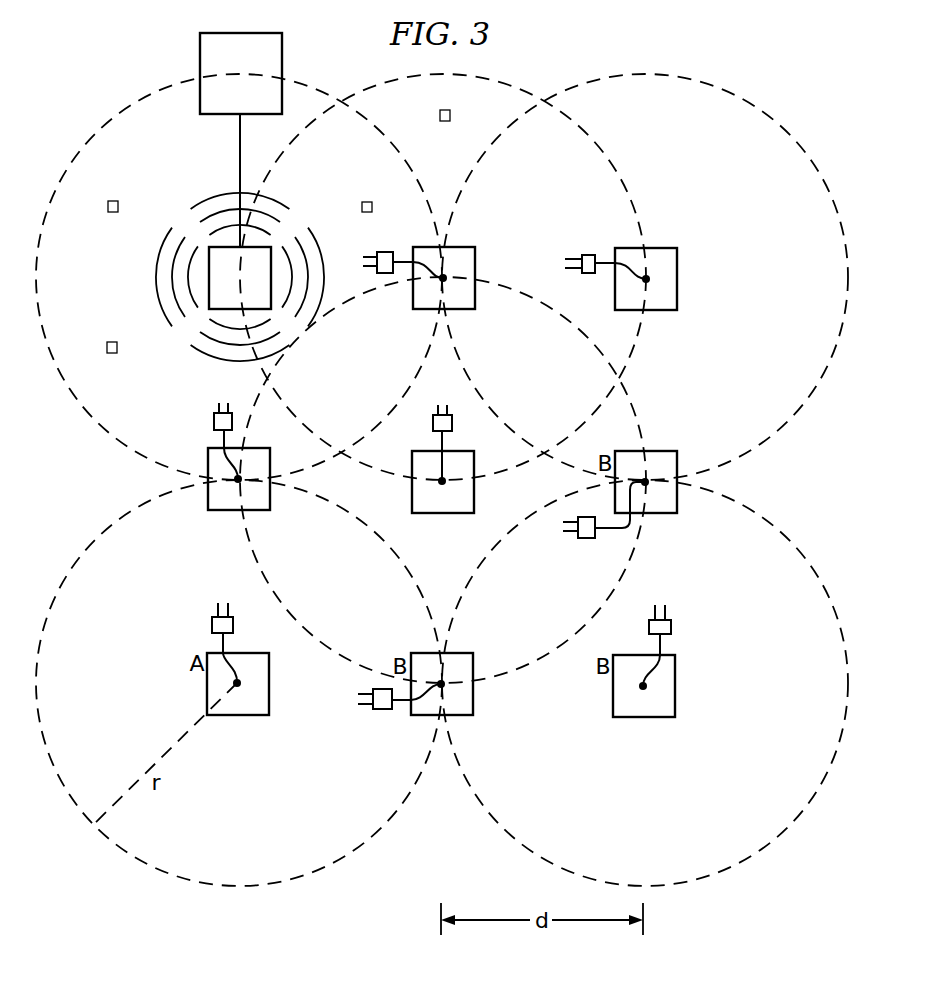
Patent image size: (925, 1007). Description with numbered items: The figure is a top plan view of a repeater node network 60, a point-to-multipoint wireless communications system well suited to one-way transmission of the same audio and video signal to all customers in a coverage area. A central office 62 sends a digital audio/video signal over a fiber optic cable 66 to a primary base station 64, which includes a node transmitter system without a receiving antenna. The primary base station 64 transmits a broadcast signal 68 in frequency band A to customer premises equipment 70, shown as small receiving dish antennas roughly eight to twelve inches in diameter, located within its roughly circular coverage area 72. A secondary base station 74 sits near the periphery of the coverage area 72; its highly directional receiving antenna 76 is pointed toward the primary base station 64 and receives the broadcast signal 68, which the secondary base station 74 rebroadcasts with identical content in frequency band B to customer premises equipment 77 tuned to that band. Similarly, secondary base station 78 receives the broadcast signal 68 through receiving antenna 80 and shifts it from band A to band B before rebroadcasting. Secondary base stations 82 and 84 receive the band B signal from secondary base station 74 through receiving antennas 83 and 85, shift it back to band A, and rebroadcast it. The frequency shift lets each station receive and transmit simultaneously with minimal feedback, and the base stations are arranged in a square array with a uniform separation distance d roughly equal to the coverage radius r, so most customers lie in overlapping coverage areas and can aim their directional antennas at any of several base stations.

The repeater node network 60 is at (775, 73).
The central office 62 is at (228, 87).
The primary base station 64 is at (228, 301).
The fiber optic cable 66 is at (240, 160).
The broadcast signal 68 is at (208, 353).
The customer premises equipment 70 is at (112, 212).
The coverage area 72 is at (158, 90).
The secondary base station 74 is at (413, 300).
The receiving antenna 76 is at (386, 252).
The customer premises equipment 77 is at (445, 121).
The secondary base station 78 is at (217, 511).
The receiving antenna 80 is at (214, 421).
The secondary base station 82 is at (473, 495).
The receiving antenna 83 is at (433, 415).
The secondary base station 84 is at (678, 292).
The receiving antenna 85 is at (588, 255).